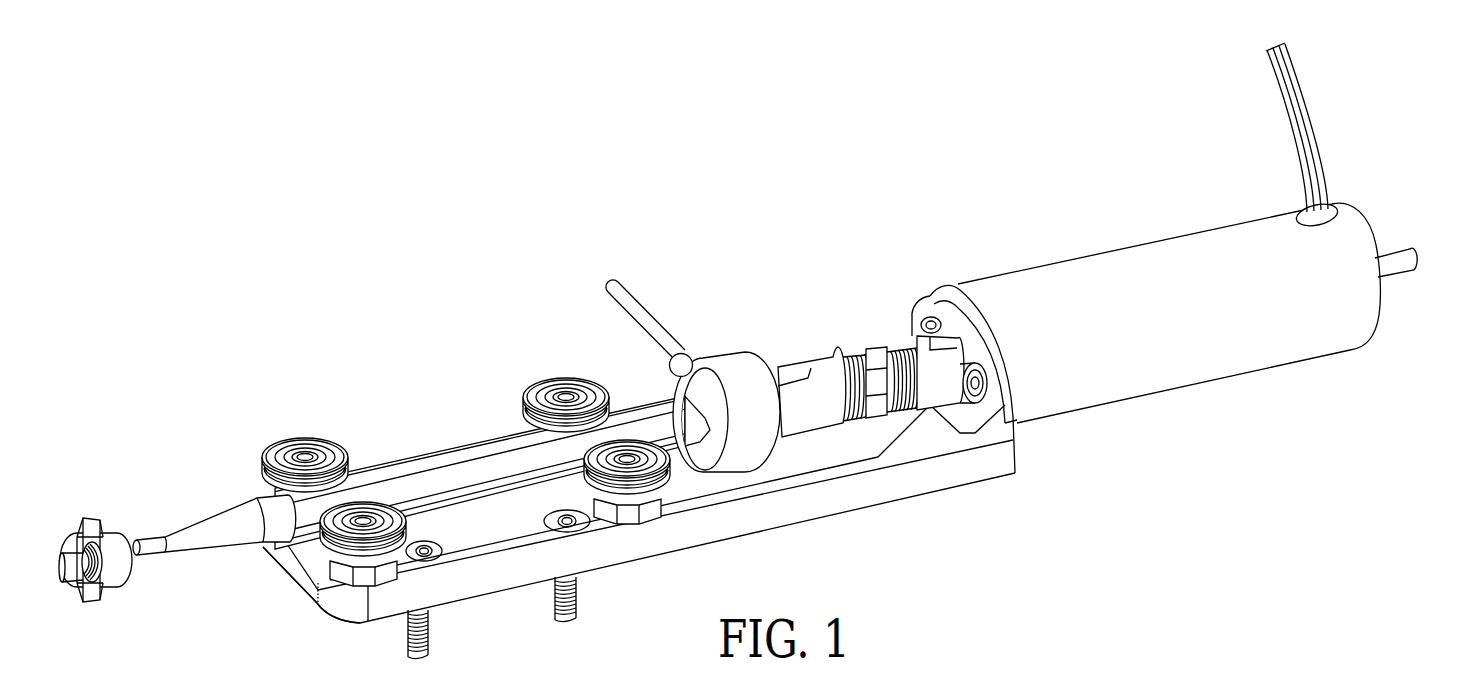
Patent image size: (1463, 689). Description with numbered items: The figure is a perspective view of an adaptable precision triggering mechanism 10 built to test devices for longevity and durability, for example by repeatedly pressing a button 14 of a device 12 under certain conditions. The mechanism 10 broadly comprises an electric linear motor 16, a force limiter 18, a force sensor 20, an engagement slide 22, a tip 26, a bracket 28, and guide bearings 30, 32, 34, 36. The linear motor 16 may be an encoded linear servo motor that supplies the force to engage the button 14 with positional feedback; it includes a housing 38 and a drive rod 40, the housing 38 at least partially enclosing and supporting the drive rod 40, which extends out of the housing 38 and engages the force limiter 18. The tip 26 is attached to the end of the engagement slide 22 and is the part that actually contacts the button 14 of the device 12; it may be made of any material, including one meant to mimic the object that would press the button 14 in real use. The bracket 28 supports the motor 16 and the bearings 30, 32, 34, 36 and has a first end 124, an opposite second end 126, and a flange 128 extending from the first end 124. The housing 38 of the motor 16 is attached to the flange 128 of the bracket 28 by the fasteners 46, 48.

The adaptable precision triggering mechanism 10 is at (509, 210).
The device 12 is at (98, 497).
The button 14 is at (122, 578).
The electric linear motor 16 is at (1114, 234).
The force limiter 18 is at (850, 338).
The force sensor 20 is at (735, 343).
The engagement slide 22 is at (447, 456).
The tip 26 is at (211, 497).
The bracket 28 is at (650, 566).
The guide bearing 30 is at (310, 457).
The guide bearing 32 is at (570, 395).
The guide bearing 34 is at (364, 516).
The guide bearing 36 is at (627, 456).
The housing 38 is at (1217, 360).
The drive rod 40 is at (1386, 258).
The fastener 46 is at (924, 322).
The fastener 48 is at (964, 402).
The first end 124 is at (970, 470).
The second end 126 is at (288, 565).
The flange 128 is at (935, 302).